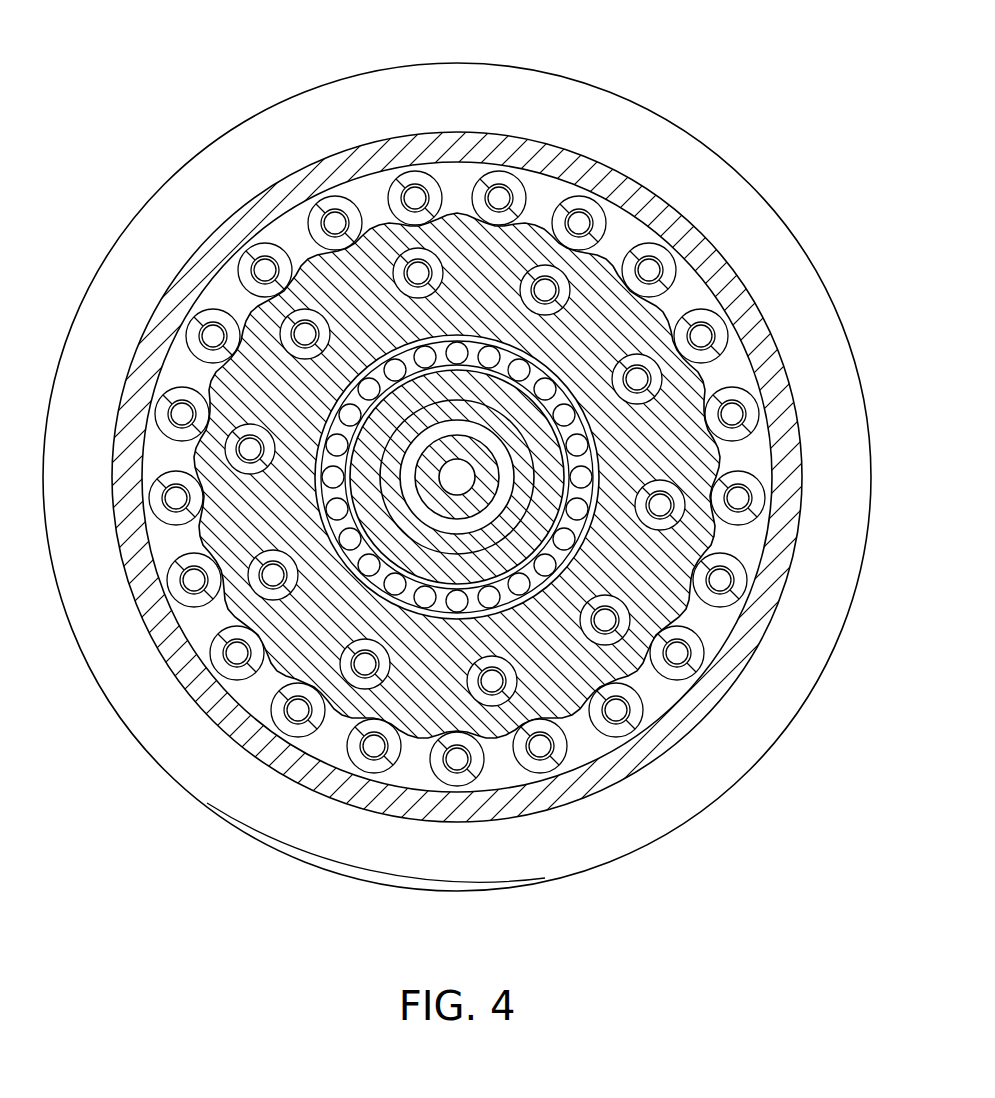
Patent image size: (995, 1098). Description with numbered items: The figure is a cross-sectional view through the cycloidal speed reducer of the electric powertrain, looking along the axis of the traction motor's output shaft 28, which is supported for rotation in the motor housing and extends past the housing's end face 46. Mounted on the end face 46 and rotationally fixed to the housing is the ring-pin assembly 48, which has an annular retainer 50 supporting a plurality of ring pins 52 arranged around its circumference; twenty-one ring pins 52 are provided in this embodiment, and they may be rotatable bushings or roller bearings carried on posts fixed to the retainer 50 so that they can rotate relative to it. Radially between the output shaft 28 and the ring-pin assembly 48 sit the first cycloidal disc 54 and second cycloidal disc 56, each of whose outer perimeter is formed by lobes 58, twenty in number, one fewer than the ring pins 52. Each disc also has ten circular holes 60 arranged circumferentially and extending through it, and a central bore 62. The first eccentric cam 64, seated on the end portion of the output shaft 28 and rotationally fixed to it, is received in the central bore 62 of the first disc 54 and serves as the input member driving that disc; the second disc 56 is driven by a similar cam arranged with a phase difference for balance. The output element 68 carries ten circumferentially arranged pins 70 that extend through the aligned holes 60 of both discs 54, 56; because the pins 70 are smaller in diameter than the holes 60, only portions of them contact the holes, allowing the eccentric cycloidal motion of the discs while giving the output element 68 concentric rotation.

The output shaft 28 is at (367, 483).
The end face 46 is at (470, 110).
The ring-pin assembly 48 is at (380, 157).
The annular retainer 50 is at (310, 177).
The ring pins 52 is at (257, 250).
The first cycloidal disc 54 is at (290, 635).
The second cycloidal disc 56 is at (550, 265).
The lobes 58 is at (405, 778).
The circular holes 60 is at (600, 270).
The central bore 62 is at (530, 600).
The first eccentric cam 64 is at (285, 318).
The output element 68 is at (690, 513).
The pins 70 is at (532, 602).